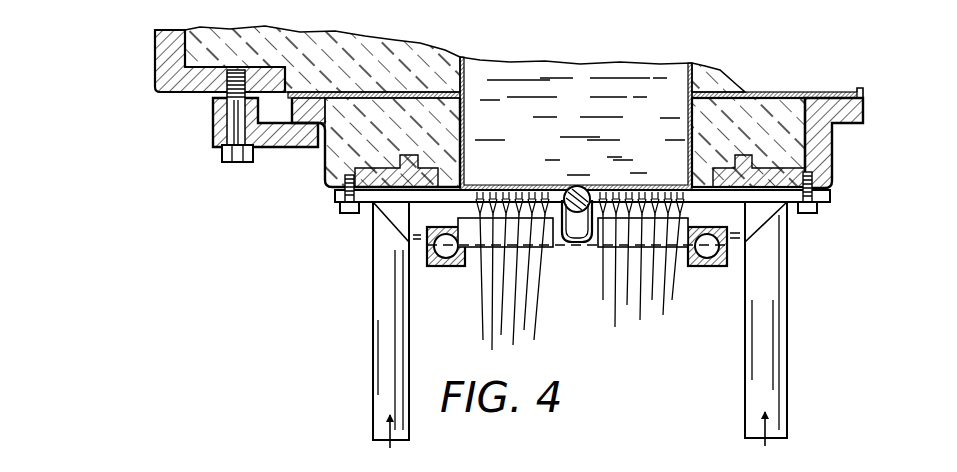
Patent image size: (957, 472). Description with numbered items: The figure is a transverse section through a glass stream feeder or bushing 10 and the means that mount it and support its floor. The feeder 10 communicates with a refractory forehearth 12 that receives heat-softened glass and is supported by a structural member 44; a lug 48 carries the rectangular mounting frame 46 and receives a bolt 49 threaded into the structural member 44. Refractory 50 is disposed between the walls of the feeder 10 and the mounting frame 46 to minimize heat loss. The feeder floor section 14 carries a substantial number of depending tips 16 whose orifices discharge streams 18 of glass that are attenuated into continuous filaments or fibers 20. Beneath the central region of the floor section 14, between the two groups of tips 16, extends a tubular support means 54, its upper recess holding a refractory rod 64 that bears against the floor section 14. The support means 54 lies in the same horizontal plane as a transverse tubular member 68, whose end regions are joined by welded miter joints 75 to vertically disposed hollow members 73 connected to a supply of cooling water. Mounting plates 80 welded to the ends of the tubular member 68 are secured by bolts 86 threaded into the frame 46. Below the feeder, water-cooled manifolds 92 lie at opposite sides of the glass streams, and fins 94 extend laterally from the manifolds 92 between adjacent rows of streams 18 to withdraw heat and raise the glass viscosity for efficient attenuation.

The stream feeder 10 is at (470, 116).
The forehearth 12 is at (150, 93).
The feeder floor section 14 is at (520, 187).
The depending tips 16 is at (553, 165).
The glass streams 18 is at (495, 214).
The continuous filaments 20 is at (522, 280).
The forehearth structural member 44 is at (155, 64).
The mounting frame 46 is at (323, 160).
The lug 48 is at (213, 121).
The bolt 49 is at (222, 153).
The refractory 50 is at (777, 106).
The tubular support means 54 is at (557, 251).
The refractory rod 64 is at (573, 190).
The transverse tubular member 68 is at (830, 157).
The vertically disposed hollow members 73 is at (372, 363).
The miter joints 75 is at (375, 215).
The mounting plates 80 is at (340, 192).
The securing bolts 86 is at (340, 208).
The manifolds 92 is at (428, 268).
The fins 94 is at (455, 216).